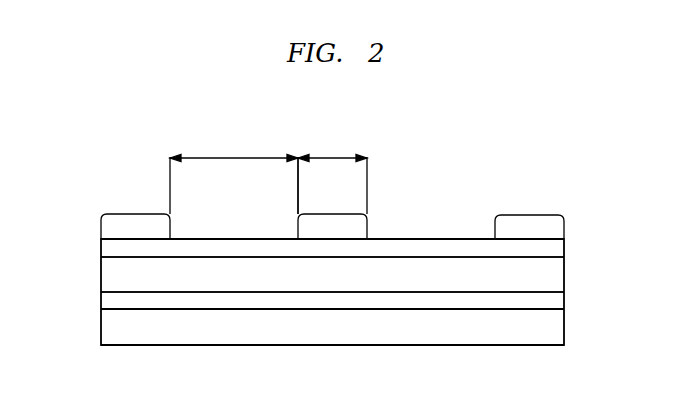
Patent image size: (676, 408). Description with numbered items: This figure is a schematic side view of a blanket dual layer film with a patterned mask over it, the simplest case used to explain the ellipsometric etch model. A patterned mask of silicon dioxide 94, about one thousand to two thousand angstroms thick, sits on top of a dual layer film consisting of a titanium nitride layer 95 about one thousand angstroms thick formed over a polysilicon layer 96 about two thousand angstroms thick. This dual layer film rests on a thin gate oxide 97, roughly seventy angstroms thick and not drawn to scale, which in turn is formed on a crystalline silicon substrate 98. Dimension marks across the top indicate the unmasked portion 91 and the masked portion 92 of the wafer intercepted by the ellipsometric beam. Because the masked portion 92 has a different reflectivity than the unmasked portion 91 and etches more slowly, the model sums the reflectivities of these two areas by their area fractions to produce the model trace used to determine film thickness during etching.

The unmasked portion 91 is at (232, 157).
The masked portion 92 is at (330, 157).
The silicon dioxide mask 94 is at (172, 229).
The titanium nitride layer 95 is at (565, 250).
The polysilicon layer 96 is at (99, 277).
The gate oxide 97 is at (565, 306).
The silicon substrate 98 is at (99, 331).